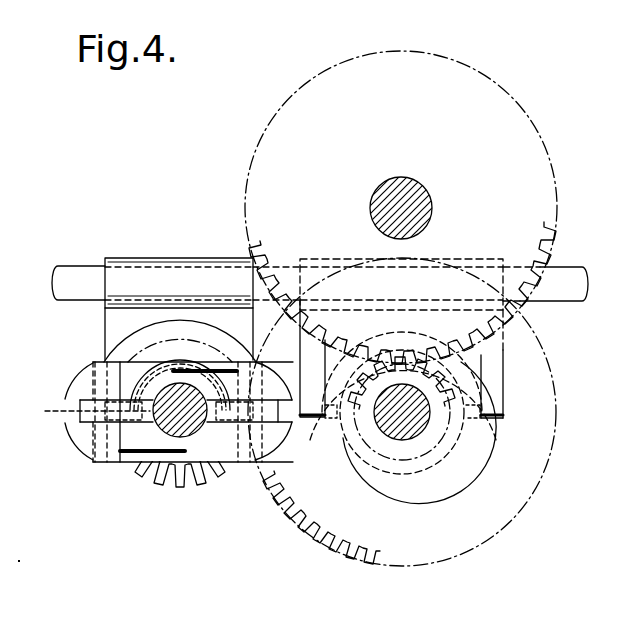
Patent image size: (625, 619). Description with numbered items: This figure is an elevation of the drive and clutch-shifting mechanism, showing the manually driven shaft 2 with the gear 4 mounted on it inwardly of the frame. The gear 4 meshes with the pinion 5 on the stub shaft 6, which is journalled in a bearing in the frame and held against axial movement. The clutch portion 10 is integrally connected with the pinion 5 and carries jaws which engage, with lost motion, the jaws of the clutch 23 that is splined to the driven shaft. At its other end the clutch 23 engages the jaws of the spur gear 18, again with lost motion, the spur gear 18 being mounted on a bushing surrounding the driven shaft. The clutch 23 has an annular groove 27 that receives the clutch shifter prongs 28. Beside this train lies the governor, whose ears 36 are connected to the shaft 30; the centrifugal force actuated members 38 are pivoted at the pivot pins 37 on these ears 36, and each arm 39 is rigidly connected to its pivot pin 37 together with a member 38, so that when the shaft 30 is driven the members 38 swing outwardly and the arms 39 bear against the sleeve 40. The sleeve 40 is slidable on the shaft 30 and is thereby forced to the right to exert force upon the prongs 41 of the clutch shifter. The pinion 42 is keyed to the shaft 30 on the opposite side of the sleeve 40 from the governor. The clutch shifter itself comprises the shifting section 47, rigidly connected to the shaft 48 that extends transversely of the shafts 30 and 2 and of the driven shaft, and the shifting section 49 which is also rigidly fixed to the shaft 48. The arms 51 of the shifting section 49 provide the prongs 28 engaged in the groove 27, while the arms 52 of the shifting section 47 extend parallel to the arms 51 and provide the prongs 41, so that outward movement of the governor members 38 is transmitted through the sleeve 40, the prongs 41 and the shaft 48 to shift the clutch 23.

The manually driven shaft 2 is at (370, 210).
The gear 4 is at (548, 196).
The pinion 5 is at (388, 400).
The stub shaft 6 is at (425, 422).
The clutch portion 10 is at (383, 482).
The spur gear 18 is at (308, 528).
The clutch 23 is at (462, 463).
The annular groove 27 is at (452, 455).
The clutch shifter prongs 28 is at (321, 420).
The shaft 30 is at (198, 428).
The ears 36 is at (80, 403).
The pivot pin 37 is at (102, 465).
The centrifugal force actuated members 38 is at (135, 372).
The arm 39 is at (222, 370).
The sleeve 40 is at (238, 452).
The prongs 41 is at (88, 412).
The pinion 42 is at (180, 488).
The shifting section 47 is at (168, 262).
The shaft 48 is at (90, 280).
The shifting section 49 is at (455, 266).
The arms 51 is at (504, 374).
The arms 52 is at (106, 336).